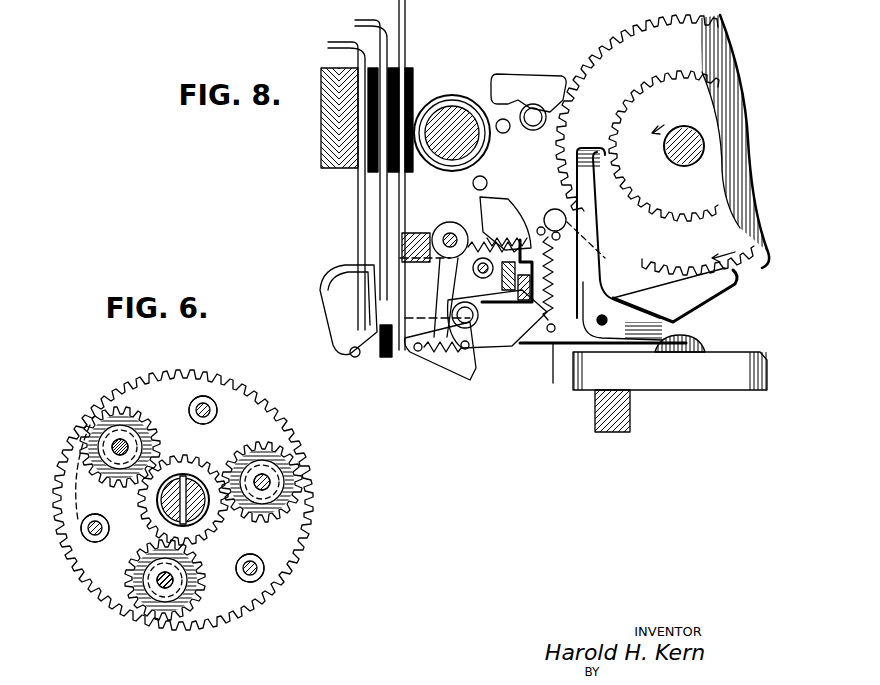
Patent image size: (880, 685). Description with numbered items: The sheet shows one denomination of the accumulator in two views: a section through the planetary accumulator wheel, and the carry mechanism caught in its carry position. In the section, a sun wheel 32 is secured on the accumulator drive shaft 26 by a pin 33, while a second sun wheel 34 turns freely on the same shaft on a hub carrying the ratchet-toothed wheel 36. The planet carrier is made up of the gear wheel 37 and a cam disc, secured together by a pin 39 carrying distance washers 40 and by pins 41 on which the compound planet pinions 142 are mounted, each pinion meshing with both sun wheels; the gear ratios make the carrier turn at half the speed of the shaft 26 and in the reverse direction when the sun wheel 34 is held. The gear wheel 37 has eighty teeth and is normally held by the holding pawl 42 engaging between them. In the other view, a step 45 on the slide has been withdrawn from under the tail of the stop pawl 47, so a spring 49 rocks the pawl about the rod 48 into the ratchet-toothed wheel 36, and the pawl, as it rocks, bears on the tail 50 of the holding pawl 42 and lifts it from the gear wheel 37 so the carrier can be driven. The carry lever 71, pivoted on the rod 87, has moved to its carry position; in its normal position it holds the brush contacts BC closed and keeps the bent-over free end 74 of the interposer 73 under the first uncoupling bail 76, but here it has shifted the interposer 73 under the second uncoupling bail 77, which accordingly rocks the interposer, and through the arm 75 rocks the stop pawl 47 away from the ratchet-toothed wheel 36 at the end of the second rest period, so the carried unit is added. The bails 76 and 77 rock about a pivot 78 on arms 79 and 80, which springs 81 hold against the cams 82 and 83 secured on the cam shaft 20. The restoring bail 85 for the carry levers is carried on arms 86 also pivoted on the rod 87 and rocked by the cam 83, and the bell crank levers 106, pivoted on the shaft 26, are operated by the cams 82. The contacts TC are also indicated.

In FIG. 8, the cam shaft 20 is at (452, 108).
In FIG. 6, the accumulator drive shaft 26 is at (260, 413).
In FIG. 8, the accumulator drive shaft 26 is at (700, 140).
In FIG. 6, the sun wheel 32 is at (182, 478).
In FIG. 6, the pin 33 is at (207, 470).
In FIG. 6, the second sun wheel 34 is at (240, 535).
In FIG. 8, the ratchet-toothed wheel 36 is at (626, 123).
In FIG. 6, the gear wheel 37 is at (65, 503).
In FIG. 8, the gear wheel 37 is at (750, 258).
In FIG. 6, the pin 39 is at (203, 396).
In FIG. 6, the distance washers 40 is at (215, 402).
In FIG. 6, the pins 41 is at (117, 448).
In FIG. 8, the holding pawl 42 is at (700, 296).
In FIG. 8, the step 45 is at (698, 348).
In FIG. 8, the stop pawl 47 is at (612, 197).
In FIG. 8, the rod 48 is at (603, 318).
In FIG. 8, the spring 49 is at (551, 248).
In FIG. 8, the tail 50 is at (626, 257).
In FIG. 8, the carry lever 71 is at (455, 374).
In FIG. 8, the interposer 73 is at (489, 348).
In FIG. 8, the free end 74 is at (530, 306).
In FIG. 8, the arm 75 is at (548, 373).
In FIG. 8, the first uncoupling bail 76 is at (552, 270).
In FIG. 8, the second uncoupling bail 77 is at (553, 288).
In FIG. 8, the pivot 78 is at (340, 292).
In FIG. 8, the arms 79 is at (510, 212).
In FIG. 8, the arms 80 is at (496, 198).
In FIG. 8, the springs 81 is at (378, 352).
In FIG. 8, the cam 82 is at (507, 132).
In FIG. 8, the cam 83 is at (473, 183).
In FIG. 8, the restoring bail 85 is at (462, 280).
In FIG. 8, the arms 86 is at (462, 228).
In FIG. 8, the rod 87 is at (446, 237).
In FIG. 8, the bell crank levers 106 is at (540, 78).
In FIG. 6, the compound planet pinions 142 is at (112, 400).
In FIG. 8, the top contact TC is at (382, 262).
In FIG. 8, the brush contacts BC is at (372, 310).